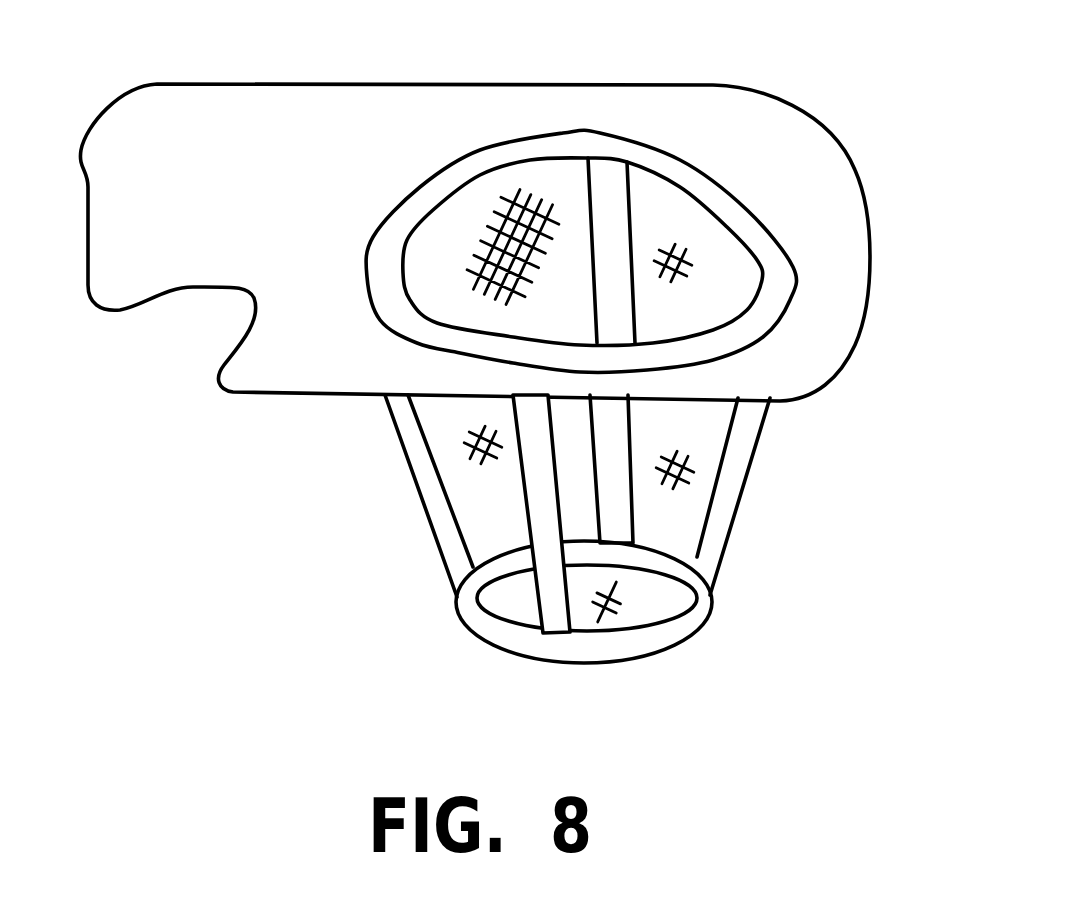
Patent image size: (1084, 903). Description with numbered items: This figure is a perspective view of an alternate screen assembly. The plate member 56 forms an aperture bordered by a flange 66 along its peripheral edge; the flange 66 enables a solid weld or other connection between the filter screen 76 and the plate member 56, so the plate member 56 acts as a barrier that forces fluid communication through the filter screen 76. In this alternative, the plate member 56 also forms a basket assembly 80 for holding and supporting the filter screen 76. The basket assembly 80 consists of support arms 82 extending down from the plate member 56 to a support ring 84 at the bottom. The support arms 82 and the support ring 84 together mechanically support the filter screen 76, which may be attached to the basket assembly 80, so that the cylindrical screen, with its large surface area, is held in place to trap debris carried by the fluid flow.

The plate member 56 is at (262, 138).
The flange 66 is at (765, 238).
The filter screen 76 is at (680, 518).
The basket assembly 80 is at (753, 458).
The support arms 82 is at (427, 507).
The support ring 84 is at (643, 645).